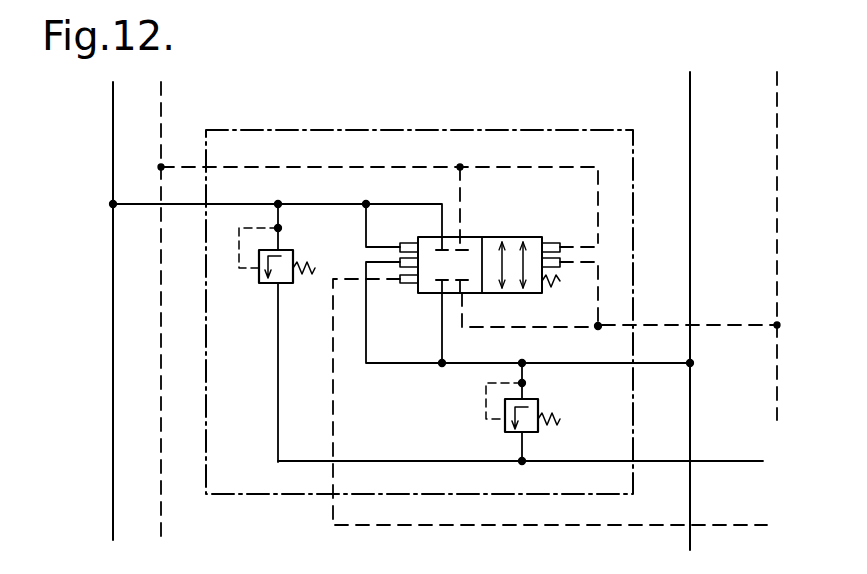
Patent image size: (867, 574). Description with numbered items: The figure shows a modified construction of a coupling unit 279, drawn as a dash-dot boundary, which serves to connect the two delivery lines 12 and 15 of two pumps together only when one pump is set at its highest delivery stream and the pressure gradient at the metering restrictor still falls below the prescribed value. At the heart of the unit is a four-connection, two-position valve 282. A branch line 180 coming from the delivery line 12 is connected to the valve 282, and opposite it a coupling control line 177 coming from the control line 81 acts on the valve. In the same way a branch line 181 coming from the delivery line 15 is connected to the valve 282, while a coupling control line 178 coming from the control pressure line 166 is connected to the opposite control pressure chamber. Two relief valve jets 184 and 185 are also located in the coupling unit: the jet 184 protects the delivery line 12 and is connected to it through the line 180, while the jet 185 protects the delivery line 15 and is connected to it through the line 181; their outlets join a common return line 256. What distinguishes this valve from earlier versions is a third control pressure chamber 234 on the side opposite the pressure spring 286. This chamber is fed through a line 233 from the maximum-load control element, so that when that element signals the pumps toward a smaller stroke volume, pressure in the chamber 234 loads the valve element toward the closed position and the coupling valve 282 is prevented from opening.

The delivery line 12 is at (113, 352).
The control line 81 is at (161, 500).
The delivery line 15 is at (690, 232).
The control pressure line 166 is at (777, 380).
The coupling unit 279 is at (390, 132).
The coupling control line 177 is at (385, 167).
The branch line 180 is at (137, 205).
The 4-connection/2-position valve 282 is at (502, 237).
The third control pressure chamber 234 is at (407, 284).
The pressure spring 286 is at (560, 283).
The coupling control line 178 is at (718, 328).
The relief valve jet 184 is at (258, 284).
The relief valve jet 185 is at (505, 432).
The branch line 181 is at (566, 364).
The return line 256 is at (722, 462).
The line 233 is at (485, 527).